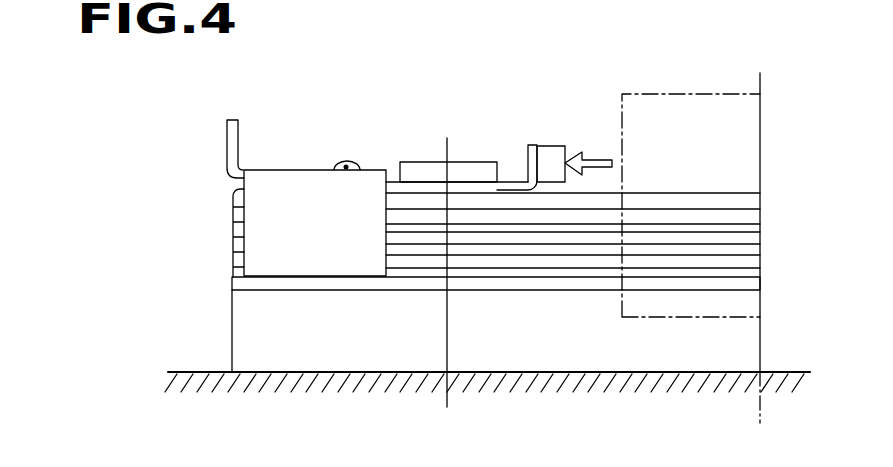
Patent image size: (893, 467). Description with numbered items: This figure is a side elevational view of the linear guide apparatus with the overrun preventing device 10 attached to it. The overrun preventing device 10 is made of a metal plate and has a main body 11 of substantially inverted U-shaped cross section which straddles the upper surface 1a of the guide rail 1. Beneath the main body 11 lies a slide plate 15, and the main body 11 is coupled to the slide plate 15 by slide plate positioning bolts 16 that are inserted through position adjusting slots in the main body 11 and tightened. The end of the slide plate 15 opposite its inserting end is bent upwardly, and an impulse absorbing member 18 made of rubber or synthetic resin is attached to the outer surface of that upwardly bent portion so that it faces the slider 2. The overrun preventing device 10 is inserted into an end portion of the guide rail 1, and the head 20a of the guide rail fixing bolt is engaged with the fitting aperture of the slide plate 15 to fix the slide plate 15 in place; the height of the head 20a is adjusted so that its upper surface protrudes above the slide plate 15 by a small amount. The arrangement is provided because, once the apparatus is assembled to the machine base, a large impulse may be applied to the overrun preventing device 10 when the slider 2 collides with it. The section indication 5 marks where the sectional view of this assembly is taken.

The guide rail 1 is at (492, 358).
The upper surface of guide rail 1a is at (673, 193).
The slider 2 is at (725, 92).
The section line indicator 5 is at (446, 150).
The overrun preventing device 10 is at (365, 148).
The main body 11 is at (290, 188).
The slide plate 15 is at (507, 188).
The positioning bolt 16 is at (340, 162).
The impulse absorbing member 18 is at (553, 157).
The head of guide rail fixing bolt 20a is at (466, 170).